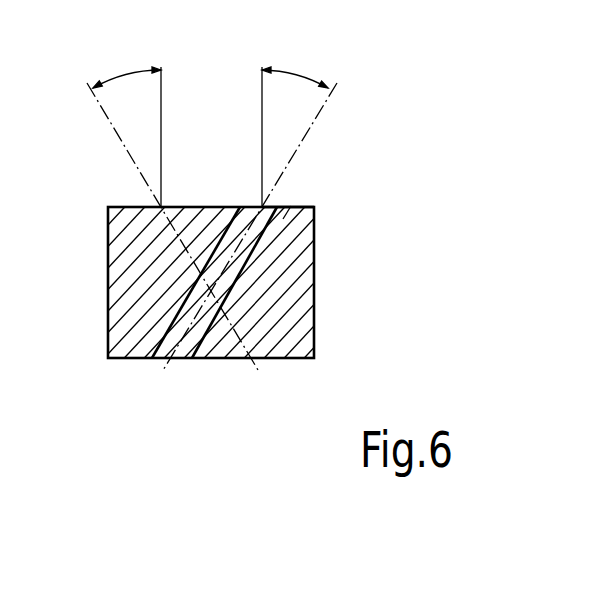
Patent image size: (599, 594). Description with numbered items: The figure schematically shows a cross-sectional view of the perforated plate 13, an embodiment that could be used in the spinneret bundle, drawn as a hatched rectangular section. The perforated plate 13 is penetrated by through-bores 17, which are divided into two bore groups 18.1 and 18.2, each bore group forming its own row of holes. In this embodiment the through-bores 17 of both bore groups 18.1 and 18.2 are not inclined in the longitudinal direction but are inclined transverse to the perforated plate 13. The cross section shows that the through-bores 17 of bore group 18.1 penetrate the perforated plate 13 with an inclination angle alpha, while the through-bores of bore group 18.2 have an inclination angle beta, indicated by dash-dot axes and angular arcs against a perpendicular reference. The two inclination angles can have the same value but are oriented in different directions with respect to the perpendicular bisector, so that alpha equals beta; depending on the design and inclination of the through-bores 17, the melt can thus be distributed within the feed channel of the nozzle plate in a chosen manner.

The perforated plate 13 is at (291, 206).
The through-bore 17 is at (247, 243).
The first bore group 18.1 is at (171, 358).
The second bore group 18.2 is at (162, 205).